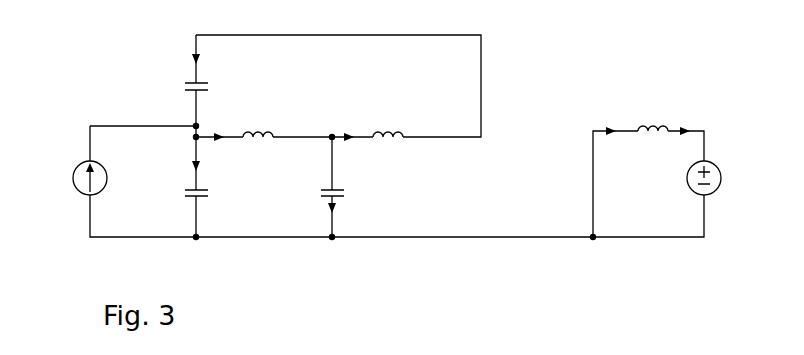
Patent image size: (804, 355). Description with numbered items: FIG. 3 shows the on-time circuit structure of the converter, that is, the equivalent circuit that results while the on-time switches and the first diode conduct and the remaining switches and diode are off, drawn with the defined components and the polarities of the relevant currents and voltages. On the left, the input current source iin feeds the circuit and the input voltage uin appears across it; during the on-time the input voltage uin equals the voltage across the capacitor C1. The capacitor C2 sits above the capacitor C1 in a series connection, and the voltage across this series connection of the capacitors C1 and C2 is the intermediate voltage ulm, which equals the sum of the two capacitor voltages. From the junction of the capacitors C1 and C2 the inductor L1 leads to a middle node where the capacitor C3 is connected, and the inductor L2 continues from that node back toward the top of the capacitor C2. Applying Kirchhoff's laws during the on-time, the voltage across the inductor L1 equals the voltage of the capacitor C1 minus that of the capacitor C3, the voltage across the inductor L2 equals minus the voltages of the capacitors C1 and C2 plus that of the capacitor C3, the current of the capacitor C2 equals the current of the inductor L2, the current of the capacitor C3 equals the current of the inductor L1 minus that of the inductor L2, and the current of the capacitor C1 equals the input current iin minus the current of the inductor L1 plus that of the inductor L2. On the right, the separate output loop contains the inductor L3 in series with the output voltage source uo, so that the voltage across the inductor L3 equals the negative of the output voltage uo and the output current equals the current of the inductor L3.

The input current iin is at (77, 178).
The input voltage uin is at (122, 181).
The output voltage uo is at (719, 178).
The intermediate voltage ulm is at (522, 137).
The capacitor C1 is at (192, 190).
The capacitor C2 is at (192, 87).
The capacitor C3 is at (328, 190).
The inductor L1 is at (251, 132).
The inductor L2 is at (381, 132).
The inductor L3 is at (654, 126).